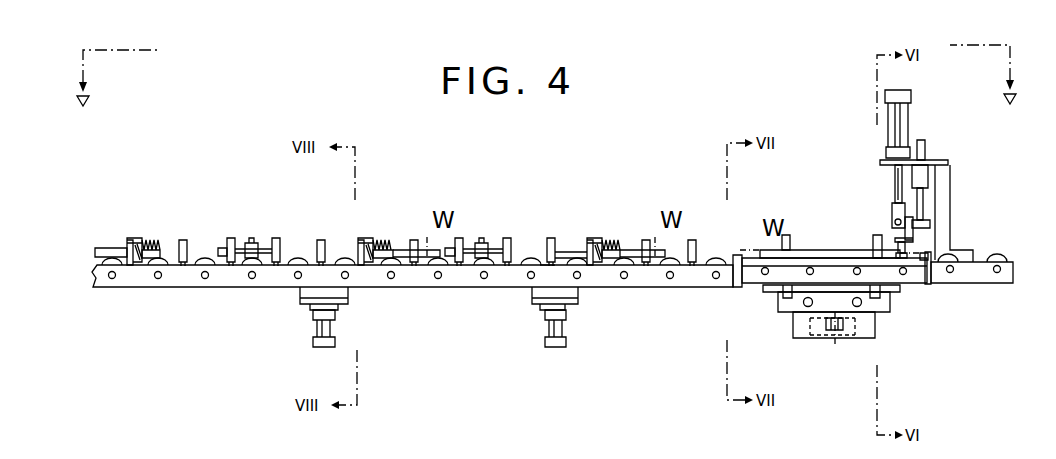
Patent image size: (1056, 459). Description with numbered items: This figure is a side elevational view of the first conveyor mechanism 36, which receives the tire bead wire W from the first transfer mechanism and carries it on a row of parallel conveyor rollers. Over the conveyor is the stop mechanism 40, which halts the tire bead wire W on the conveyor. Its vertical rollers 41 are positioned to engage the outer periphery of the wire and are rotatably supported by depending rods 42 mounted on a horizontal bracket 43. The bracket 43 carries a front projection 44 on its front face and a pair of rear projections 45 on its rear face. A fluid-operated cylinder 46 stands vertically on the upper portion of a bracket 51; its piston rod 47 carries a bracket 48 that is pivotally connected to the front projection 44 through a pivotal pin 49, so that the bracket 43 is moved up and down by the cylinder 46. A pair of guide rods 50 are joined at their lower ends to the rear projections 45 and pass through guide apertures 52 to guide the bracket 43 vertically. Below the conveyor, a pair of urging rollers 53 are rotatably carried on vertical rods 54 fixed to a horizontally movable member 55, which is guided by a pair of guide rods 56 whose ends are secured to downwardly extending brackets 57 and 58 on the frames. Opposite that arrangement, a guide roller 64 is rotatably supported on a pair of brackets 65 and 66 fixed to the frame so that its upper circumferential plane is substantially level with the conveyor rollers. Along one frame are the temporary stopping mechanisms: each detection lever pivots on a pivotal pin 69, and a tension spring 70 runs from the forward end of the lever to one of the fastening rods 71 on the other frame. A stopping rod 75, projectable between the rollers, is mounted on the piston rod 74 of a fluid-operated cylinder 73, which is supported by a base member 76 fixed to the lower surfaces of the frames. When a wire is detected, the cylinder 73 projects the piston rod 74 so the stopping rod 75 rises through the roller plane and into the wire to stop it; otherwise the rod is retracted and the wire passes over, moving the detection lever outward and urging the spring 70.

The first conveyor mechanism 36 is at (510, 353).
The stop mechanism 40 is at (960, 190).
The vertical rollers 41 is at (901, 259).
The rods 42 is at (910, 250).
The horizontal bracket 43 is at (875, 243).
The front projection 44 is at (904, 232).
The rear projections 45 is at (920, 228).
The fluid-operated cylinder 46 is at (910, 98).
The piston rod 47 is at (897, 182).
The bracket 48 is at (898, 200).
The pivotal pin 49 is at (893, 216).
The guide rods 50 is at (924, 152).
The bracket 51 is at (948, 168).
The guide apertures 52 is at (926, 170).
The urging rollers 53 is at (787, 235).
The vertical rods 54 is at (790, 293).
The movable member 55 is at (888, 306).
The guide roller 56 is at (807, 307).
The bracket 57 is at (856, 340).
The bracket 58 is at (859, 307).
The guide roller 64 is at (740, 258).
The bracket 65 is at (931, 276).
The bracket 66 is at (736, 288).
The pivotal pin 69 is at (256, 243).
The tension spring 70 is at (150, 240).
The fastening rods 71 is at (132, 240).
The fluid-operated cylinder 73 is at (318, 330).
The piston rod 74 is at (541, 266).
The stopping rod 75 is at (550, 240).
The base member 76 is at (346, 297).